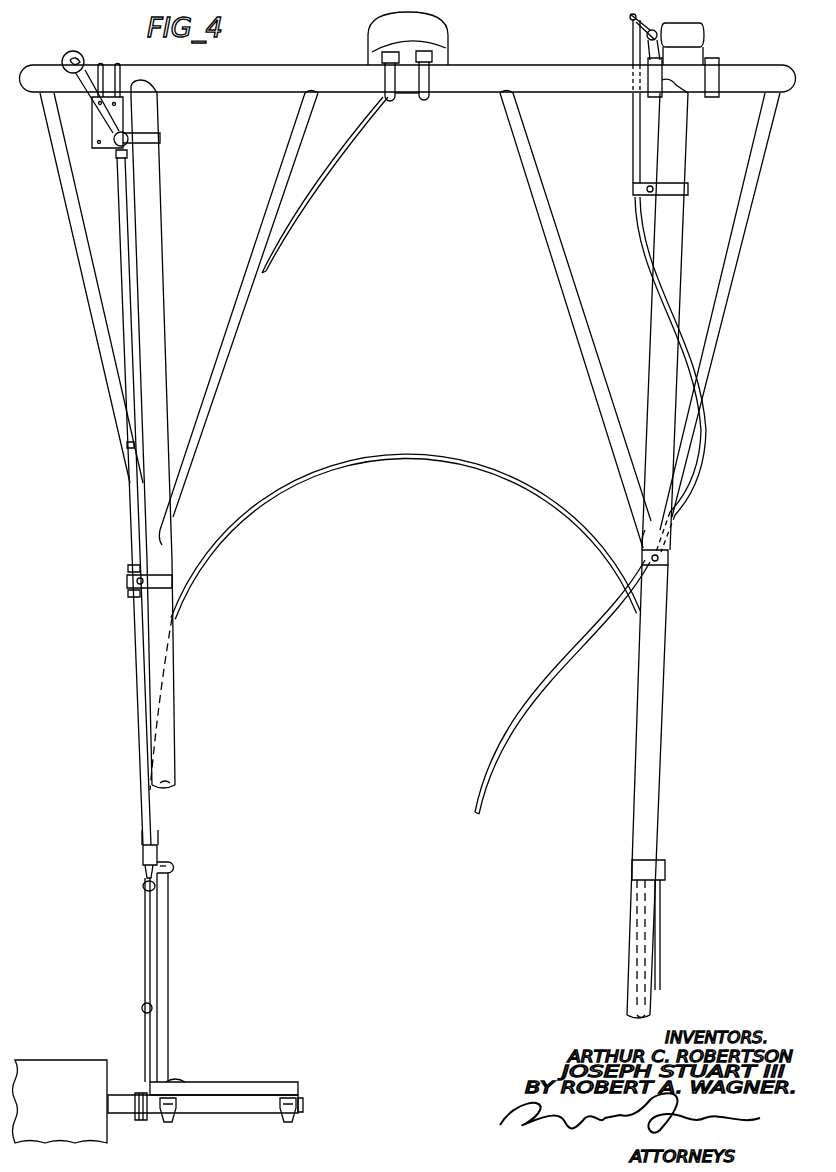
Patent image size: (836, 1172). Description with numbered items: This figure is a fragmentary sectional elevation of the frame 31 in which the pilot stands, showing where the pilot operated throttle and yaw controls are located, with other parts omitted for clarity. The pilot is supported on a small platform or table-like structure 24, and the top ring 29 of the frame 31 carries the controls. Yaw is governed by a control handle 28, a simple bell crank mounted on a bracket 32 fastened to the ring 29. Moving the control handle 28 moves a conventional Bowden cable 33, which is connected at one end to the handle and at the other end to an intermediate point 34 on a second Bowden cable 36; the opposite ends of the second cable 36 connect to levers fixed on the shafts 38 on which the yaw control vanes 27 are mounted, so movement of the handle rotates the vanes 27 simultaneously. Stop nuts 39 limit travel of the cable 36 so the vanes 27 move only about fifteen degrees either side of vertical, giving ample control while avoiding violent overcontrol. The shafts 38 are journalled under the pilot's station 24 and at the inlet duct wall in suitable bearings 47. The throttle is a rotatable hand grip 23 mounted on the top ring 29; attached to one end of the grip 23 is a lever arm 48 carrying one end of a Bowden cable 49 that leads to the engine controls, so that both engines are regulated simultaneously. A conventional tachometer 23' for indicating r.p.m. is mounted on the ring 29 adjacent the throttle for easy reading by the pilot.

The rotatable hand grip 23 is at (691, 50).
The tachometer 23' is at (421, 51).
The platform 24 is at (212, 1085).
The yaw control vanes 27 is at (45, 1070).
The control handle 28 is at (84, 52).
The top ring 29 is at (481, 76).
The frame 31 is at (164, 298).
The bracket 32 is at (110, 117).
The Bowden cable 33 is at (130, 477).
The intermediate point 34 is at (143, 850).
The second Bowden cable 36 is at (347, 463).
The shafts 38 is at (210, 1103).
The stop nuts 39 is at (128, 445).
The bearings 47 is at (286, 1122).
The lever arm 48 is at (643, 10).
The Bowden cable 49 is at (633, 43).